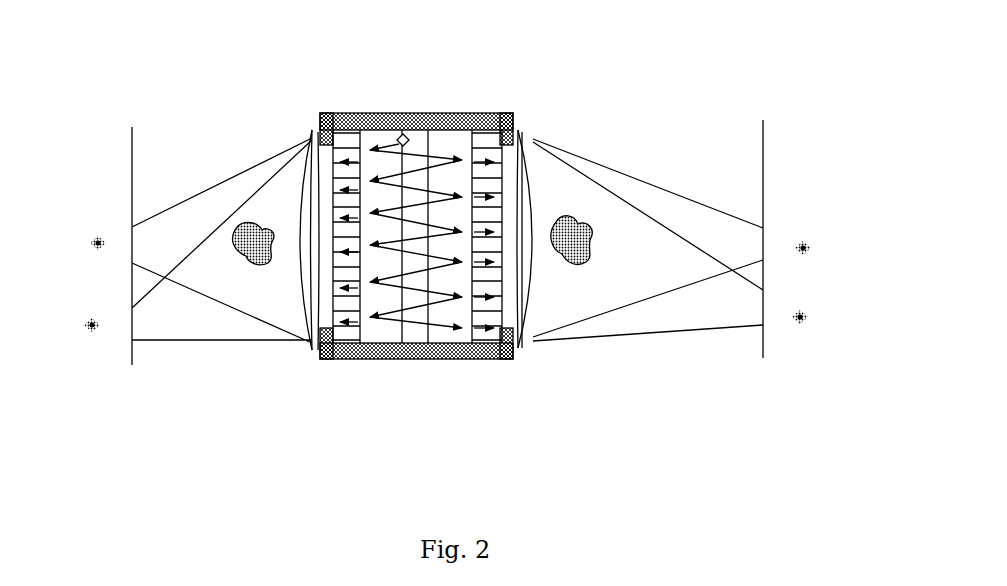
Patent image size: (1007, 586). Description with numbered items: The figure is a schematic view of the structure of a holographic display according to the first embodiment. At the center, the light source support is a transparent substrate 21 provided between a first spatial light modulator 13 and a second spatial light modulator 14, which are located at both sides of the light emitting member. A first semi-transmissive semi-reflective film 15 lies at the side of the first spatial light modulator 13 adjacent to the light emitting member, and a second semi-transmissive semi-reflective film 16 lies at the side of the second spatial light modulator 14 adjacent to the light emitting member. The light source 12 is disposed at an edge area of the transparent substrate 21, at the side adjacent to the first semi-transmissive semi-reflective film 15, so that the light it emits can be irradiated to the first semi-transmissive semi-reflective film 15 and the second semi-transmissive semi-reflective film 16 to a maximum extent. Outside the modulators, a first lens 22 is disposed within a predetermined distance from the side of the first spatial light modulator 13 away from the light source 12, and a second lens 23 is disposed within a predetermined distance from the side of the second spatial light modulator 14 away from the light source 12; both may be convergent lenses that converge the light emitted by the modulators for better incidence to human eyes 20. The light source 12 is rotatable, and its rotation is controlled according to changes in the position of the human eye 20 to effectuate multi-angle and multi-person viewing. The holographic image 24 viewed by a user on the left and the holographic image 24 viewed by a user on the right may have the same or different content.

The light source 12 is at (404, 134).
The first spatial light modulator 13 is at (343, 345).
The second spatial light modulator 14 is at (498, 130).
The first semi-transmissive semi-reflective film 15 is at (372, 308).
The second semi-transmissive semi-reflective film 16 is at (500, 312).
The human eye 20 is at (799, 330).
The transparent substrate 21 is at (412, 340).
The first lens 22 is at (312, 143).
The second lens 23 is at (533, 137).
The holographic image 24 is at (573, 233).